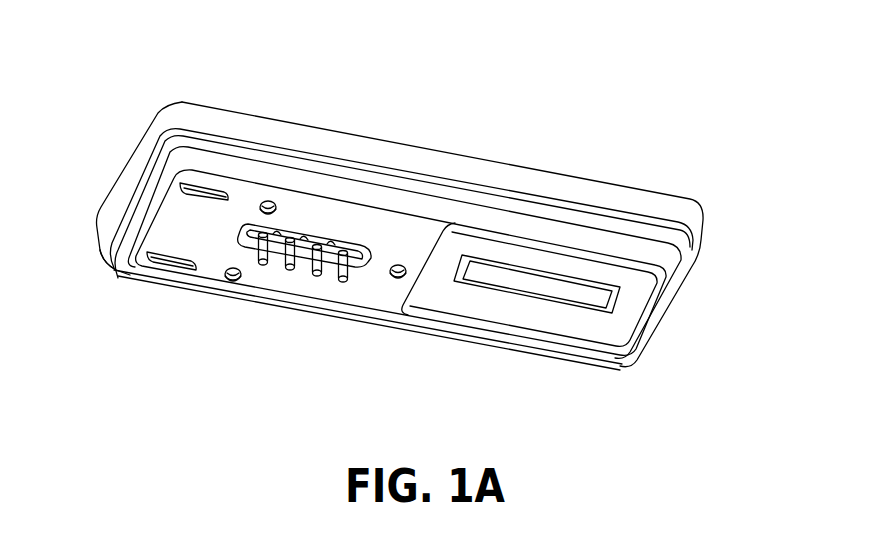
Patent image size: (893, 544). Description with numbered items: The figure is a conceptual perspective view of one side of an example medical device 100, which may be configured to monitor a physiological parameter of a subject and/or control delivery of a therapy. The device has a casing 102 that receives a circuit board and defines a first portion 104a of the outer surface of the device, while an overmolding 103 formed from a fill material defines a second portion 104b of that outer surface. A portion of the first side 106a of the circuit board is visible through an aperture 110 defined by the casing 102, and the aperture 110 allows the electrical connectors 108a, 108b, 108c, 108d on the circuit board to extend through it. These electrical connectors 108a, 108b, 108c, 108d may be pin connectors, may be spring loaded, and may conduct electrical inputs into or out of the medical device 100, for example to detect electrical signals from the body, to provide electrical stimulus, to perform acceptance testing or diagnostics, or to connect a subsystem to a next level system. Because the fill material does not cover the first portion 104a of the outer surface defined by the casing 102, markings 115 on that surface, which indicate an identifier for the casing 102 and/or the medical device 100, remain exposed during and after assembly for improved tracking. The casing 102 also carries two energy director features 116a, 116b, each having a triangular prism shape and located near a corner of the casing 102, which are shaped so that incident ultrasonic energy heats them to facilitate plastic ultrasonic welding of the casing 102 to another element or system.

The medical device 100 is at (497, 49).
The casing 102 is at (680, 262).
The overmolding 103 is at (638, 203).
The first portion of outer surface 104a is at (112, 264).
The second portion of outer surface 104b is at (289, 121).
The first side of circuit board 106a is at (334, 243).
The electrical connector 108a is at (262, 265).
The electrical connector 108b is at (289, 271).
The electrical connector 108c is at (317, 277).
The electrical connector 108d is at (343, 283).
The aperture 110 is at (243, 244).
The markings 115 is at (537, 311).
The energy director feature 116a is at (221, 182).
The energy director feature 116b is at (150, 262).